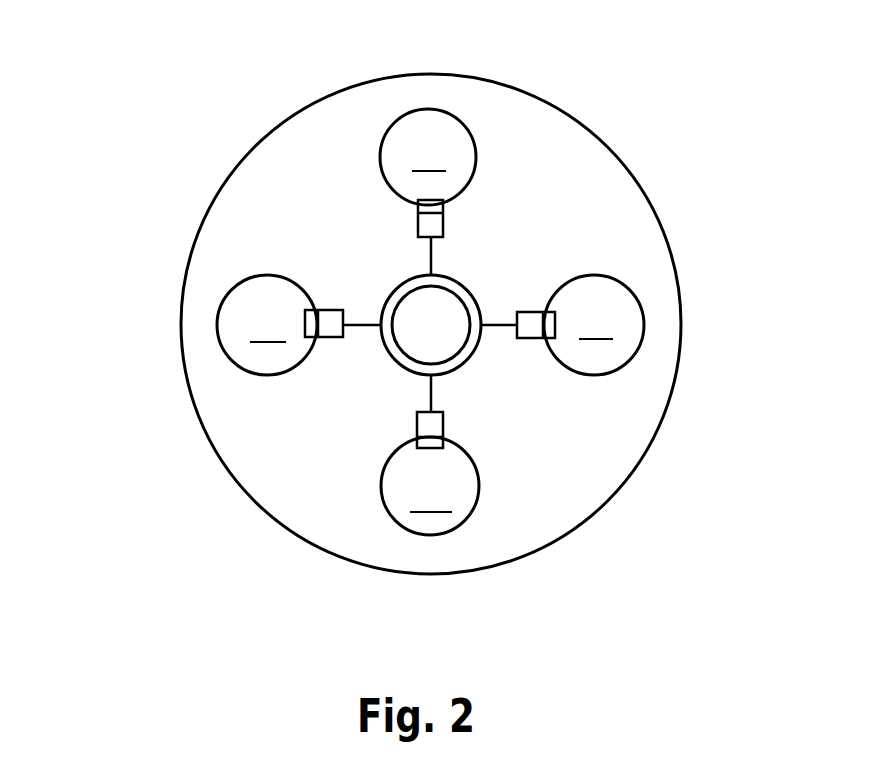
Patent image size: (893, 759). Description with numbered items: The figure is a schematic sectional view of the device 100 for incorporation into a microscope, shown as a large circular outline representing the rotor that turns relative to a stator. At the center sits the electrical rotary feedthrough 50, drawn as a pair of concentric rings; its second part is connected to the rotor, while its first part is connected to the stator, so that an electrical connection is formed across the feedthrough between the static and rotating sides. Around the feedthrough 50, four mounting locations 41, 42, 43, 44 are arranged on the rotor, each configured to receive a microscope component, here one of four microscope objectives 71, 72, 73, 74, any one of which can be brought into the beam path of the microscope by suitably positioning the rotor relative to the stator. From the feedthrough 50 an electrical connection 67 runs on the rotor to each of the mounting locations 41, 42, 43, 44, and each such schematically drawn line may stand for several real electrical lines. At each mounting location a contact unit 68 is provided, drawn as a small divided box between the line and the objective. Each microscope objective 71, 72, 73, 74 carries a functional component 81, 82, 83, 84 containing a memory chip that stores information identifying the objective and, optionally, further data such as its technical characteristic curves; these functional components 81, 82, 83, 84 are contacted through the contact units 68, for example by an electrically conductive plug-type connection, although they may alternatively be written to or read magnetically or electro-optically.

The device 100 is at (160, 128).
The electrical rotary feedthrough 50 is at (423, 308).
The electrical connection 67 is at (431, 263).
The contact unit 68 is at (438, 335).
The mounting location 41 is at (493, 117).
The mounting location 42 is at (644, 304).
The mounting location 43 is at (430, 550).
The mounting location 44 is at (208, 327).
The microscope objective 71 is at (468, 128).
The microscope objective 72 is at (630, 288).
The microscope objective 73 is at (430, 535).
The microscope objective 74 is at (215, 333).
The functional component 81 is at (440, 210).
The functional component 82 is at (550, 328).
The functional component 83 is at (440, 448).
The functional component 84 is at (310, 332).